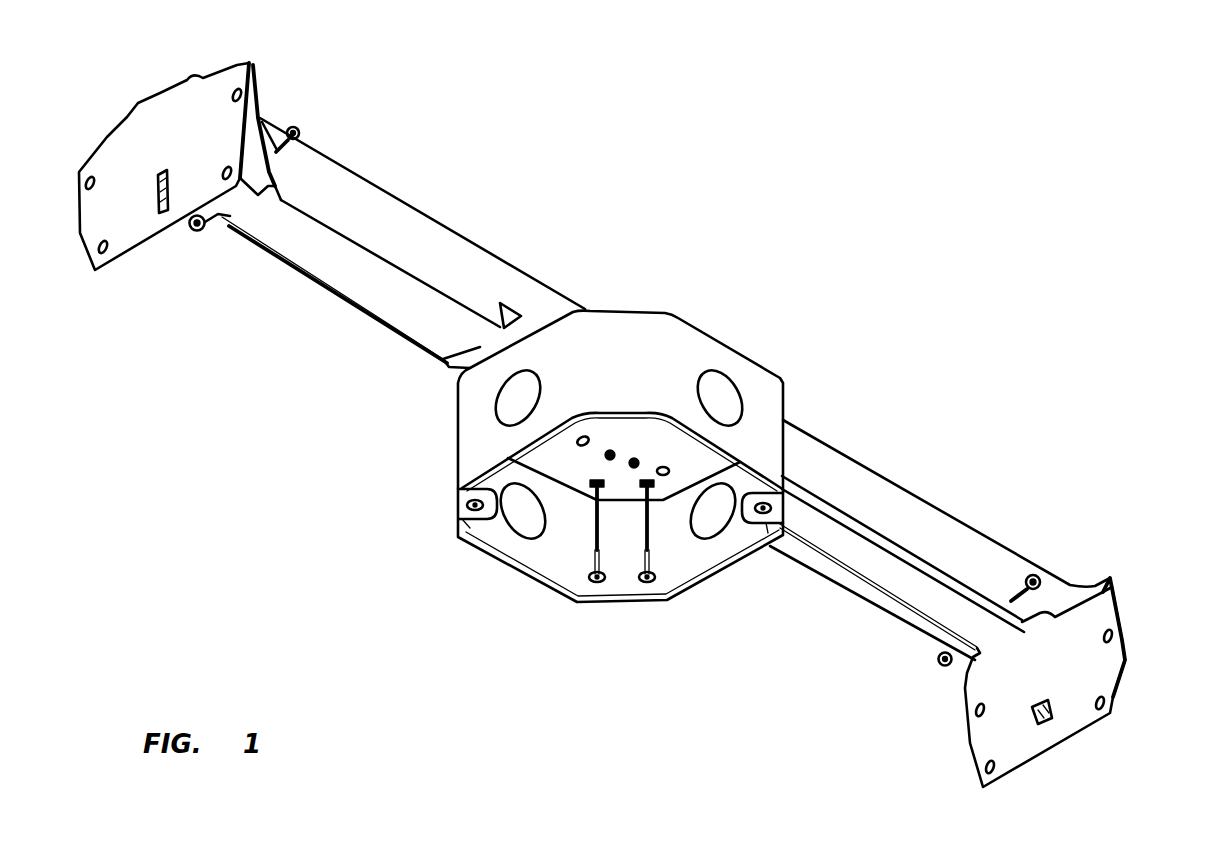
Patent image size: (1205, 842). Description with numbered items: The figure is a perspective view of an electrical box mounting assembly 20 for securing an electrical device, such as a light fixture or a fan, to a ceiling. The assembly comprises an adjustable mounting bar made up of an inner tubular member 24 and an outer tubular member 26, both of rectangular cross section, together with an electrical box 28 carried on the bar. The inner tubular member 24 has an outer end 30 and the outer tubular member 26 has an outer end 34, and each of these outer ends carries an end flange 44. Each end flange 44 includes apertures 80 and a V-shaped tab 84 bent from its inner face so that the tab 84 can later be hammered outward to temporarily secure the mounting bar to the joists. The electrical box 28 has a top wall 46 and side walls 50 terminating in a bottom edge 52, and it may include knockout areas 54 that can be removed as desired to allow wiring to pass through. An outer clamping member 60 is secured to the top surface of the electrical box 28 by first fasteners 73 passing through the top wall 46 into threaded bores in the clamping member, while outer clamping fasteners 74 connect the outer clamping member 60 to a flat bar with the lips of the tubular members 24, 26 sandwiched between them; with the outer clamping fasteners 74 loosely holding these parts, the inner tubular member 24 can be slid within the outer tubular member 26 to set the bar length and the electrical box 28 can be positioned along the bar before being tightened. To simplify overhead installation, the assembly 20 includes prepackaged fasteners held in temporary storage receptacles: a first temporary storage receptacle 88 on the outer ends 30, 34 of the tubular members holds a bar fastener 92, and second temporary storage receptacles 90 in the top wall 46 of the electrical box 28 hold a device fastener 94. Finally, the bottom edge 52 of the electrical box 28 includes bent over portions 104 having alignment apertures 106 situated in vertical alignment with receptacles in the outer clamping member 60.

The electrical box mounting assembly 20 is at (742, 222).
The inner tubular member 24 is at (401, 233).
The outer tubular member 26 is at (923, 533).
The electrical box 28 is at (628, 312).
The outer end 30 is at (160, 93).
The outer end 34 is at (1108, 590).
The end flange 44 is at (181, 148).
The top wall 46 is at (740, 452).
The side walls 50 is at (501, 456).
The bottom edge 52 is at (525, 572).
The knockout areas 54 is at (728, 393).
The outer clamping member 60 is at (517, 318).
The first fasteners 73 is at (612, 452).
The outer clamping fasteners 74 is at (584, 441).
The apertures 80 is at (251, 66).
The V-shaped tab 84 is at (155, 193).
The first temporary storage receptacle 88 is at (277, 150).
The second temporary storage receptacles 90 is at (594, 481).
The bar fastener 92 is at (300, 128).
The device fastener 94 is at (597, 582).
The bent over portions 104 is at (462, 503).
The alignment apertures 106 is at (470, 523).